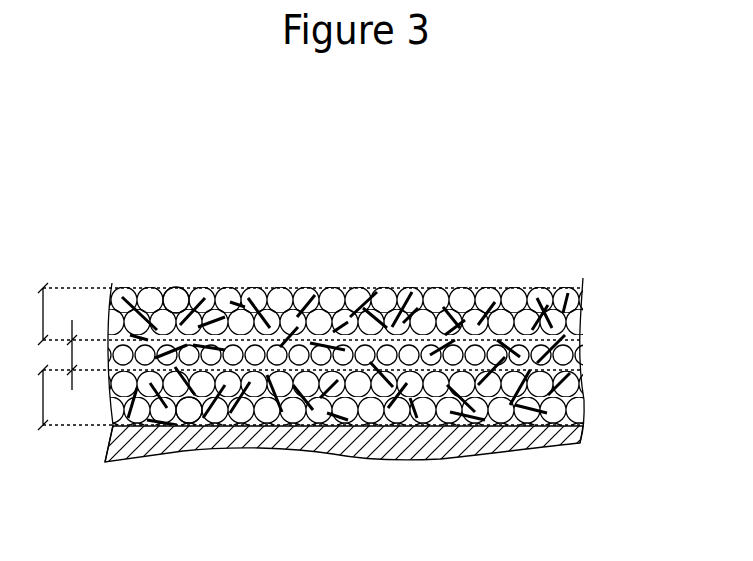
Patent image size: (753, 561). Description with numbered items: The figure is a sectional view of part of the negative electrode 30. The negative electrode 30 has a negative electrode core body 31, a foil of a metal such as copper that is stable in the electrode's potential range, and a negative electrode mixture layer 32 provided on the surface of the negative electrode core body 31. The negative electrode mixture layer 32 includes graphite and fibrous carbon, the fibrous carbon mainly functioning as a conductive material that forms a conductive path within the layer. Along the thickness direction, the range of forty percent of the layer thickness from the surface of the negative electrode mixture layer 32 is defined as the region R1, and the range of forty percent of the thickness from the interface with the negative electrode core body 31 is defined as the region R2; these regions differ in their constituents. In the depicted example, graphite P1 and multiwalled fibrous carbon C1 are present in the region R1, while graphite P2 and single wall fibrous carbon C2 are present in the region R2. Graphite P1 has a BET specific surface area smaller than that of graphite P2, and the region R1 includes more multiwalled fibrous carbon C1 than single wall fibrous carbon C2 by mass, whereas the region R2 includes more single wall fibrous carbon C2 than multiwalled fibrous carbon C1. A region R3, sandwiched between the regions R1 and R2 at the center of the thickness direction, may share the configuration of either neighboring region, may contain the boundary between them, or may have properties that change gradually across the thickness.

The negative electrode 30 is at (612, 254).
The negative electrode core body 31 is at (384, 460).
The negative electrode mixture layer 32 is at (580, 362).
The graphite P1 is at (173, 287).
The multiwalled fibrous carbon C1 is at (291, 287).
The graphite P2 is at (183, 452).
The single wall fibrous carbon C2 is at (259, 448).
The first region R1 is at (33, 314).
The second region R2 is at (33, 397).
The third region R3 is at (67, 355).